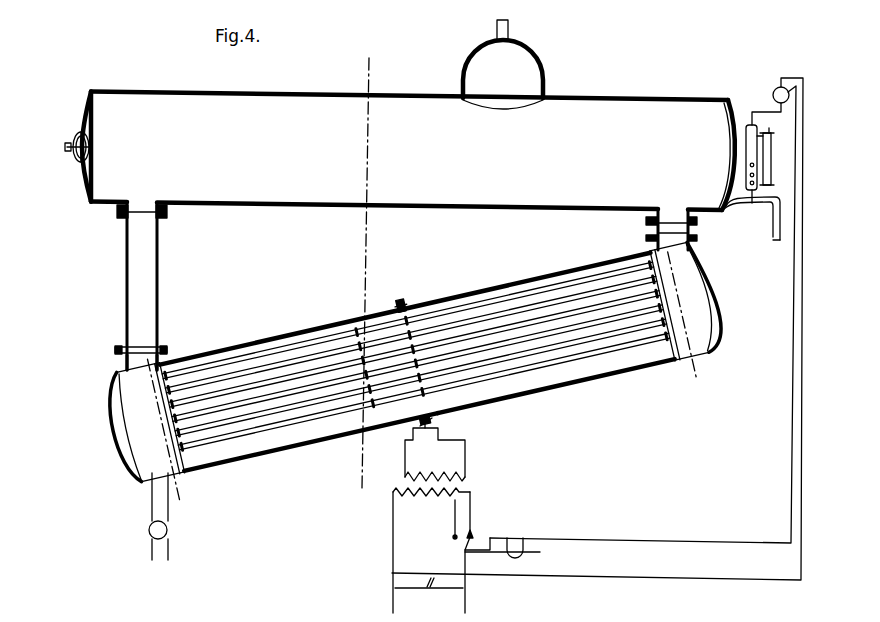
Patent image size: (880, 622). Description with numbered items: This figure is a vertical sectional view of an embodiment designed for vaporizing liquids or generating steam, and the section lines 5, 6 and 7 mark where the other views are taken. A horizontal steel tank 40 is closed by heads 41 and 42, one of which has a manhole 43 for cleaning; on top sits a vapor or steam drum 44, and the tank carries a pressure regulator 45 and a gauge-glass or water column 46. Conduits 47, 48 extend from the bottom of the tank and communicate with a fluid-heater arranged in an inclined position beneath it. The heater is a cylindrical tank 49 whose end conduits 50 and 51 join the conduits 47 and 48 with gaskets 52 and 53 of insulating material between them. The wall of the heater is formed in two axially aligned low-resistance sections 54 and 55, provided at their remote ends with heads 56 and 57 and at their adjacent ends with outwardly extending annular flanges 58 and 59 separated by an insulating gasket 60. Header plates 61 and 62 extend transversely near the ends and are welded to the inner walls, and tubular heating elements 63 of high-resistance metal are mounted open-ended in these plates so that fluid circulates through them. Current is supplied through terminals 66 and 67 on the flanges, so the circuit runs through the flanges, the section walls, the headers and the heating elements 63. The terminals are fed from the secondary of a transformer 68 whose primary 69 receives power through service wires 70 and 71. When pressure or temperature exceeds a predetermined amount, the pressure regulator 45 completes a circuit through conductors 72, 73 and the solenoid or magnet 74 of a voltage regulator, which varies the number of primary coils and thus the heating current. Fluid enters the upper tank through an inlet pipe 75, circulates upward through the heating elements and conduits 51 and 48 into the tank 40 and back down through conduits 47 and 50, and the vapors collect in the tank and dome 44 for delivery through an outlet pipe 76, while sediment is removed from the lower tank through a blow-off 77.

The section line 5- 5 is at (366, 270).
The section line 6- 6 is at (156, 439).
The section line 7- 7 is at (426, 369).
The horizontal tank 40 is at (288, 92).
The head 41 is at (88, 120).
The head 42 is at (726, 128).
The manhole 43 is at (77, 157).
The vapor or steam drum 44 is at (521, 74).
The pressure regulator 45 is at (773, 89).
The gauge-glass or water column 46 is at (766, 151).
The conduit 47 is at (162, 211).
The conduit 48 is at (652, 220).
The cylindrical tank 49 is at (287, 333).
The conduit 50 is at (159, 293).
The conduit 51 is at (652, 245).
The gasket 52 is at (118, 213).
The gasket 53 is at (652, 229).
The section 54 is at (326, 440).
The section 55 is at (582, 385).
The head 56 is at (116, 428).
The head 57 is at (718, 307).
The annular flange 58 is at (400, 303).
The annular flange 59 is at (408, 305).
The gasket 60 is at (403, 300).
The header plate 61 is at (190, 462).
The header plate 62 is at (664, 362).
The tubular heating elements 63 is at (278, 400).
The terminal 66 is at (418, 425).
The terminal 67 is at (432, 420).
The transformer 68 is at (463, 478).
The primary 69 is at (466, 492).
The service wire 70 is at (390, 576).
The service wire 71 is at (467, 580).
The conductor 72 is at (776, 150).
The conductor 73 is at (806, 92).
The solenoid or magnet 74 is at (515, 545).
The inlet pipe 75 is at (772, 237).
The outlet pipe 76 is at (516, 37).
The blow-off 77 is at (152, 512).